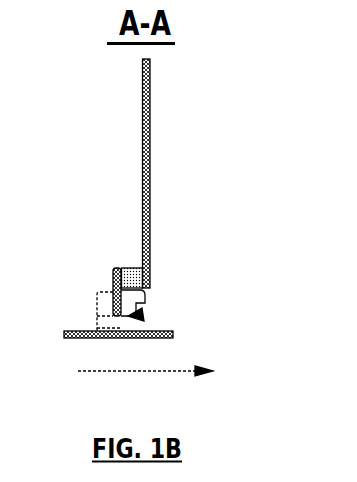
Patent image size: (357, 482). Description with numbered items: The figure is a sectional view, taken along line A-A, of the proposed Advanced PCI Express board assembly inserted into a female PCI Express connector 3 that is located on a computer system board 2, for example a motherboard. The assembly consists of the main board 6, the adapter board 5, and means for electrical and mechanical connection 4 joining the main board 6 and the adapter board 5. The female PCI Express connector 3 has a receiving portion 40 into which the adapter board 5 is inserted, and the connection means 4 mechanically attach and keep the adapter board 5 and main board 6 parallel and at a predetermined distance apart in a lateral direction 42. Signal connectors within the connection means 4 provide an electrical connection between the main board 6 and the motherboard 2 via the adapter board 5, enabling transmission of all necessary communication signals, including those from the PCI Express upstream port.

The computer system board 2 is at (66, 339).
The female PCI Express connector 3 is at (105, 314).
The means for electrical and mechanical connection 4 is at (138, 270).
The adapter board 5 is at (117, 270).
The main board 6 is at (152, 122).
The receiving portion 40 is at (142, 319).
The lateral direction 42 is at (145, 383).